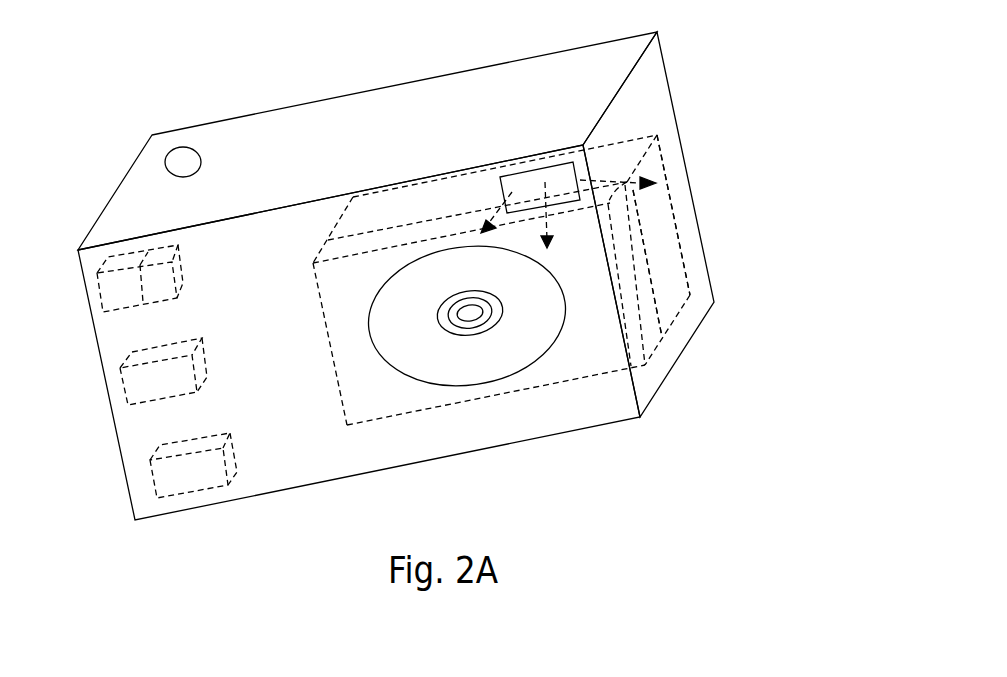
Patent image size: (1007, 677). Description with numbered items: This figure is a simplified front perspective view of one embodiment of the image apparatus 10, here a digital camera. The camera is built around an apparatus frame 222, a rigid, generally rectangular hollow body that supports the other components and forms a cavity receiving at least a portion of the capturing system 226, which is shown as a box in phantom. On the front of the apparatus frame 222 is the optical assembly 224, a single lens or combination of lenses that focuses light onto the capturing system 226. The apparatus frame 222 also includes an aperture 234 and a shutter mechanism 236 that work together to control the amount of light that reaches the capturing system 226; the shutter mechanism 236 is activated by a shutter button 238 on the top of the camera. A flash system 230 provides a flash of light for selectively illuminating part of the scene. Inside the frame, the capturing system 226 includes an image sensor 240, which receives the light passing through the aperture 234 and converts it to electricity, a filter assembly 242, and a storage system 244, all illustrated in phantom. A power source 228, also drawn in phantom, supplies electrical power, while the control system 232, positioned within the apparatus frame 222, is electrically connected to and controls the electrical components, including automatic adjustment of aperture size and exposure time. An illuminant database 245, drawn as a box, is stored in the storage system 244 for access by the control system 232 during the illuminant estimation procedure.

The image apparatus 10 is at (152, 120).
The apparatus frame 222 is at (310, 123).
The optical assembly 224 is at (455, 323).
The capturing system 226 is at (798, 243).
The power source 228 is at (168, 473).
The flash system 230 is at (530, 183).
The control system 232 is at (140, 387).
The aperture 234 is at (470, 313).
The shutter mechanism 236 is at (492, 320).
The shutter button 238 is at (182, 157).
The image sensor 240 is at (668, 278).
The filter assembly 242 is at (650, 330).
The storage system 244 is at (113, 288).
The illuminant database 245 is at (160, 283).